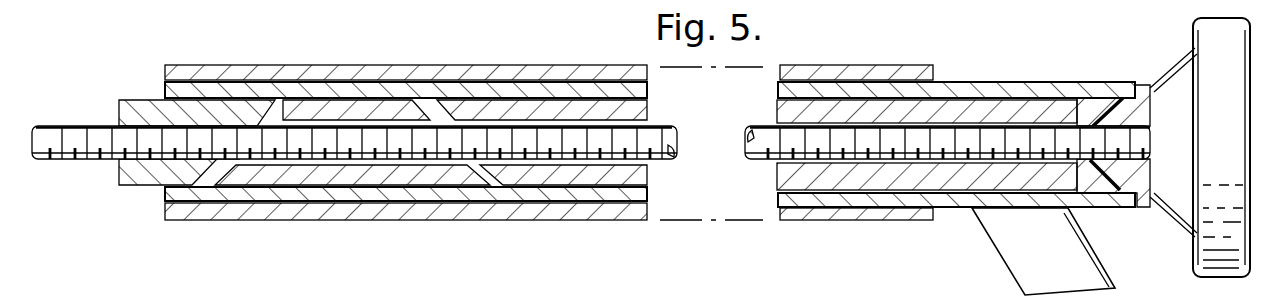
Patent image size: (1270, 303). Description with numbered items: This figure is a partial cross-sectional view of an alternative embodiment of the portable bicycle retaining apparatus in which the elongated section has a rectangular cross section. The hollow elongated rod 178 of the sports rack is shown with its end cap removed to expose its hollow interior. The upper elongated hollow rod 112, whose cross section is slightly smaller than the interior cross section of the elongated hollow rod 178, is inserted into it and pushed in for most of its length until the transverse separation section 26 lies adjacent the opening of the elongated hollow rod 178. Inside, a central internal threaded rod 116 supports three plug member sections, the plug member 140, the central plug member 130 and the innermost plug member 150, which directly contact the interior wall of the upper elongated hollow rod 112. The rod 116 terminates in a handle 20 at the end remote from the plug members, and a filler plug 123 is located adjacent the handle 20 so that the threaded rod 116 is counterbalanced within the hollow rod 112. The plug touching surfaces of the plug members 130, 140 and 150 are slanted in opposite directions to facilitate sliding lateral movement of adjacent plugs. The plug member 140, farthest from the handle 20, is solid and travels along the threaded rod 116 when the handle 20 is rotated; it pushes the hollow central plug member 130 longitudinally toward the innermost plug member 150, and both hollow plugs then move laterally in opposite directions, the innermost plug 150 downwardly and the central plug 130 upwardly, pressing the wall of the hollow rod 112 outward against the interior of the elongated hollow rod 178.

The handle 20 is at (1237, 146).
The transverse separation section 26 is at (1060, 258).
The upper elongated hollow rod 112 is at (237, 88).
The internal threaded rod 116 is at (360, 137).
The filler plug 123 is at (1105, 105).
The central plug member 130 is at (300, 183).
The plug member 140 is at (127, 182).
The innermost plug member 150 is at (522, 181).
The elongated hollow rod 178 is at (510, 70).